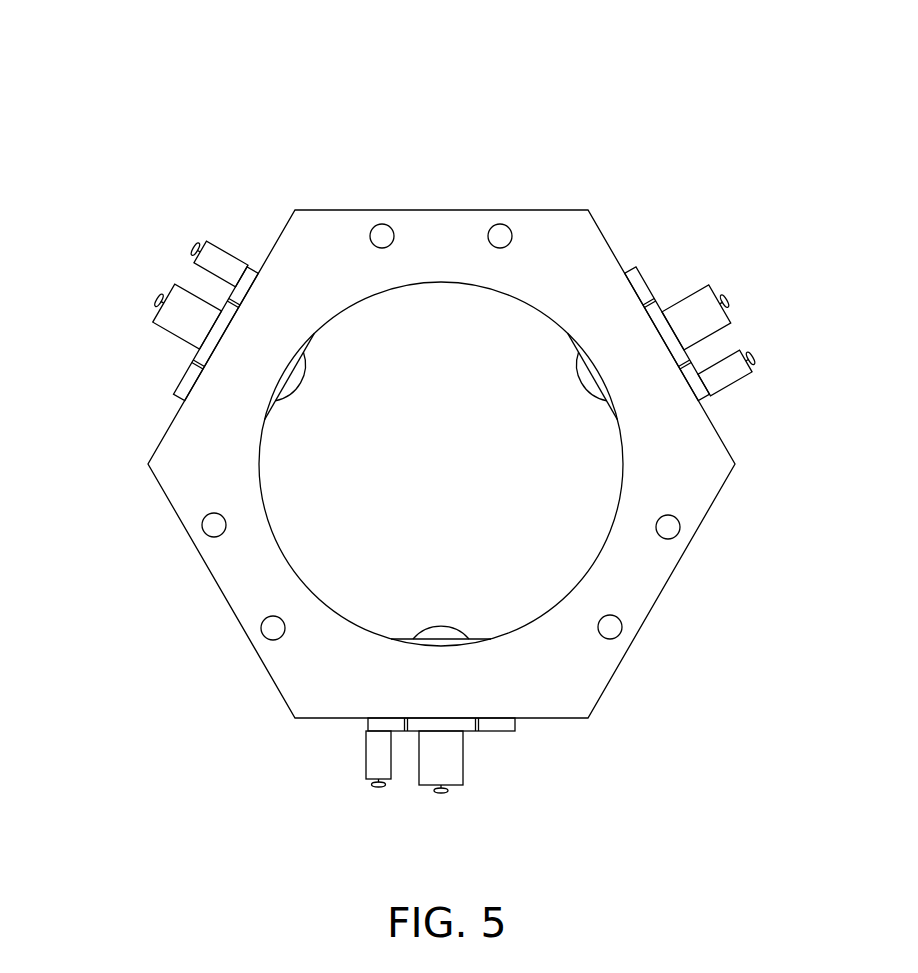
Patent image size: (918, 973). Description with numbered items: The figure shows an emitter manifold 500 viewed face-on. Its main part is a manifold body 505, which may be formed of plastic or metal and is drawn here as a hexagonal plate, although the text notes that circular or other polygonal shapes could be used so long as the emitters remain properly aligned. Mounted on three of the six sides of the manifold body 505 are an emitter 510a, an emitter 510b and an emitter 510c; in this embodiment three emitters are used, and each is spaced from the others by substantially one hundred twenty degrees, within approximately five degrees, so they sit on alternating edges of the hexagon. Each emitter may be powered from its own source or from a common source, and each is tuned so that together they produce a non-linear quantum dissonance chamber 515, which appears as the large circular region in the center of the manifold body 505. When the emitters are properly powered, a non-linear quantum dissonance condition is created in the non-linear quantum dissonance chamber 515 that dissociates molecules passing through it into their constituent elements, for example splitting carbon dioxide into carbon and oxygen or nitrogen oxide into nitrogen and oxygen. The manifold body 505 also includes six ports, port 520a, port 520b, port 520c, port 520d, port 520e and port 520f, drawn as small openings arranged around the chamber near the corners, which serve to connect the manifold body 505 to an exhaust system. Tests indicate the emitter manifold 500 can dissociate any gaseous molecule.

The emitter manifold 500 is at (178, 37).
The manifold body 505 is at (393, 210).
The emitter 510a is at (178, 384).
The emitter 510b is at (497, 732).
The emitter 510c is at (647, 280).
The non-linear quantum dissonance chamber 515 is at (272, 533).
The port 520a is at (670, 538).
The port 520b is at (621, 631).
The port 520c is at (263, 634).
The port 520d is at (202, 526).
The port 520e is at (373, 227).
The port 520f is at (498, 224).